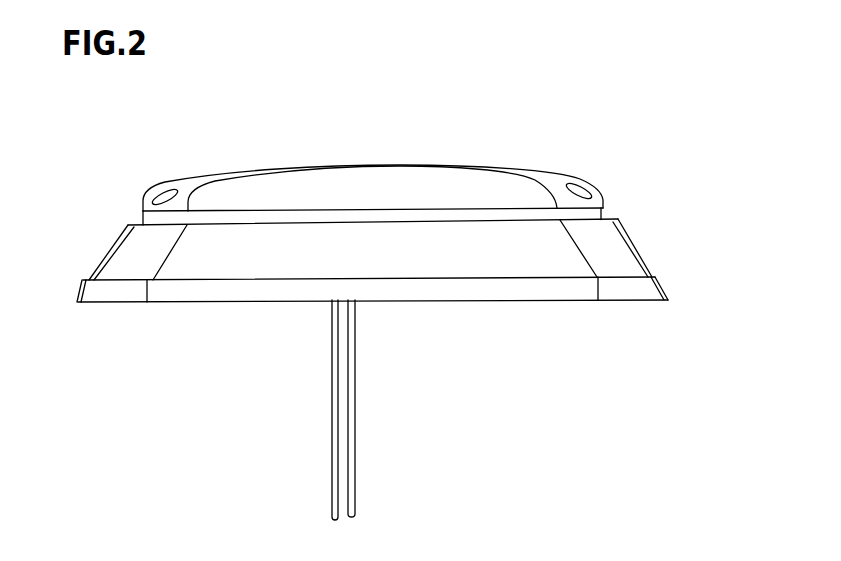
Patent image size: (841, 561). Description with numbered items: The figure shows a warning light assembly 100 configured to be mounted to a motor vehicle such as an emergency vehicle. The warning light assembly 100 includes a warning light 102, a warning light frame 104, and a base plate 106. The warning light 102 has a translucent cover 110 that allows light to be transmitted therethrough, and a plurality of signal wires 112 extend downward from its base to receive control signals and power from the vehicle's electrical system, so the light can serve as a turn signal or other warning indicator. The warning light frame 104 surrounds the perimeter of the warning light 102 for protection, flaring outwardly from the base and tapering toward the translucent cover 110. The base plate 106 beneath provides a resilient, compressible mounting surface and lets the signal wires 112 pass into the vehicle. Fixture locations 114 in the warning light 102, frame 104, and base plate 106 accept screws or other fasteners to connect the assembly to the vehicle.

The warning light assembly 100 is at (178, 350).
The warning light 102 is at (599, 208).
The warning light frame 104 is at (626, 247).
The base plate 106 is at (661, 287).
The translucent cover 110 is at (270, 183).
The signal wires 112 is at (347, 472).
The fixture locations 114 is at (159, 193).